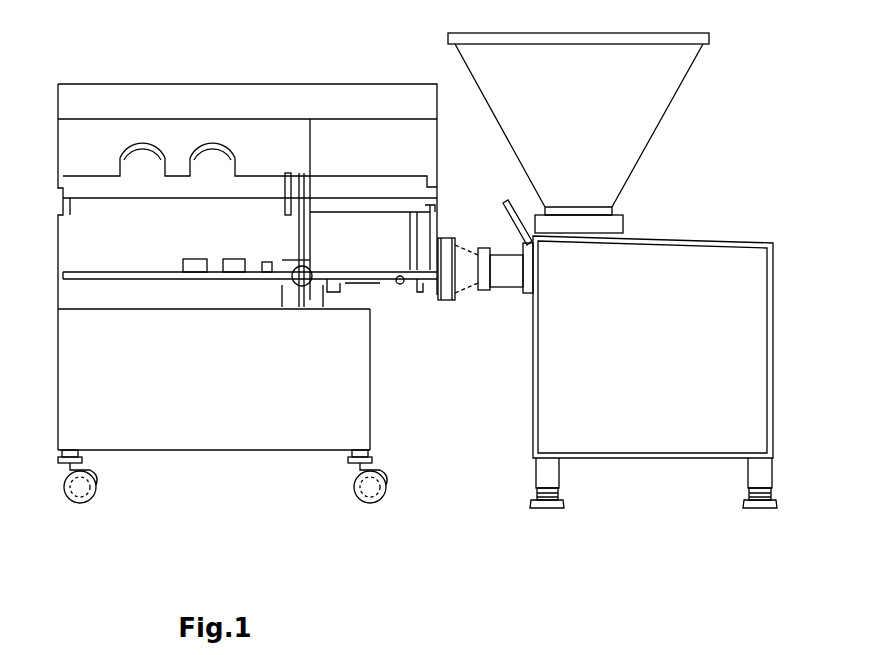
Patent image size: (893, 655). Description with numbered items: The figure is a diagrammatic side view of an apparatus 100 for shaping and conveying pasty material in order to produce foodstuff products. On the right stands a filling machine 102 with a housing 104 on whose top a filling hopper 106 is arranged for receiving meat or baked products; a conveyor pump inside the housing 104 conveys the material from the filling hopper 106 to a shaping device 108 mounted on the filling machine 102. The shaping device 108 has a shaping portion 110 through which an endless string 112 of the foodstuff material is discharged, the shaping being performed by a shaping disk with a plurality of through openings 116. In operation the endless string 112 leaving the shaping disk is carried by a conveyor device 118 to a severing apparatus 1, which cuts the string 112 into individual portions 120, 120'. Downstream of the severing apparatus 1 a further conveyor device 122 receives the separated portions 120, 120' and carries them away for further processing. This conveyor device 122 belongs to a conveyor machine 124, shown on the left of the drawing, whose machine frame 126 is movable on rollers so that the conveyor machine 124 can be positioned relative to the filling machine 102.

The severing apparatus 1 is at (292, 233).
The apparatus 100 is at (449, 530).
The filling machine 102 is at (622, 340).
The housing 104 is at (717, 262).
The filling hopper 106 is at (663, 78).
The shaping device 108 is at (448, 322).
The shaping portion 110 is at (450, 280).
The endless string 112 is at (343, 285).
The through openings 116 is at (695, 642).
The conveyor device 118 is at (380, 280).
The individual portion 120 is at (247, 157).
The individual portion 120' is at (211, 149).
The conveyor device 122 is at (176, 283).
The conveyor machine 124 is at (273, 478).
The machine frame 126 is at (130, 427).